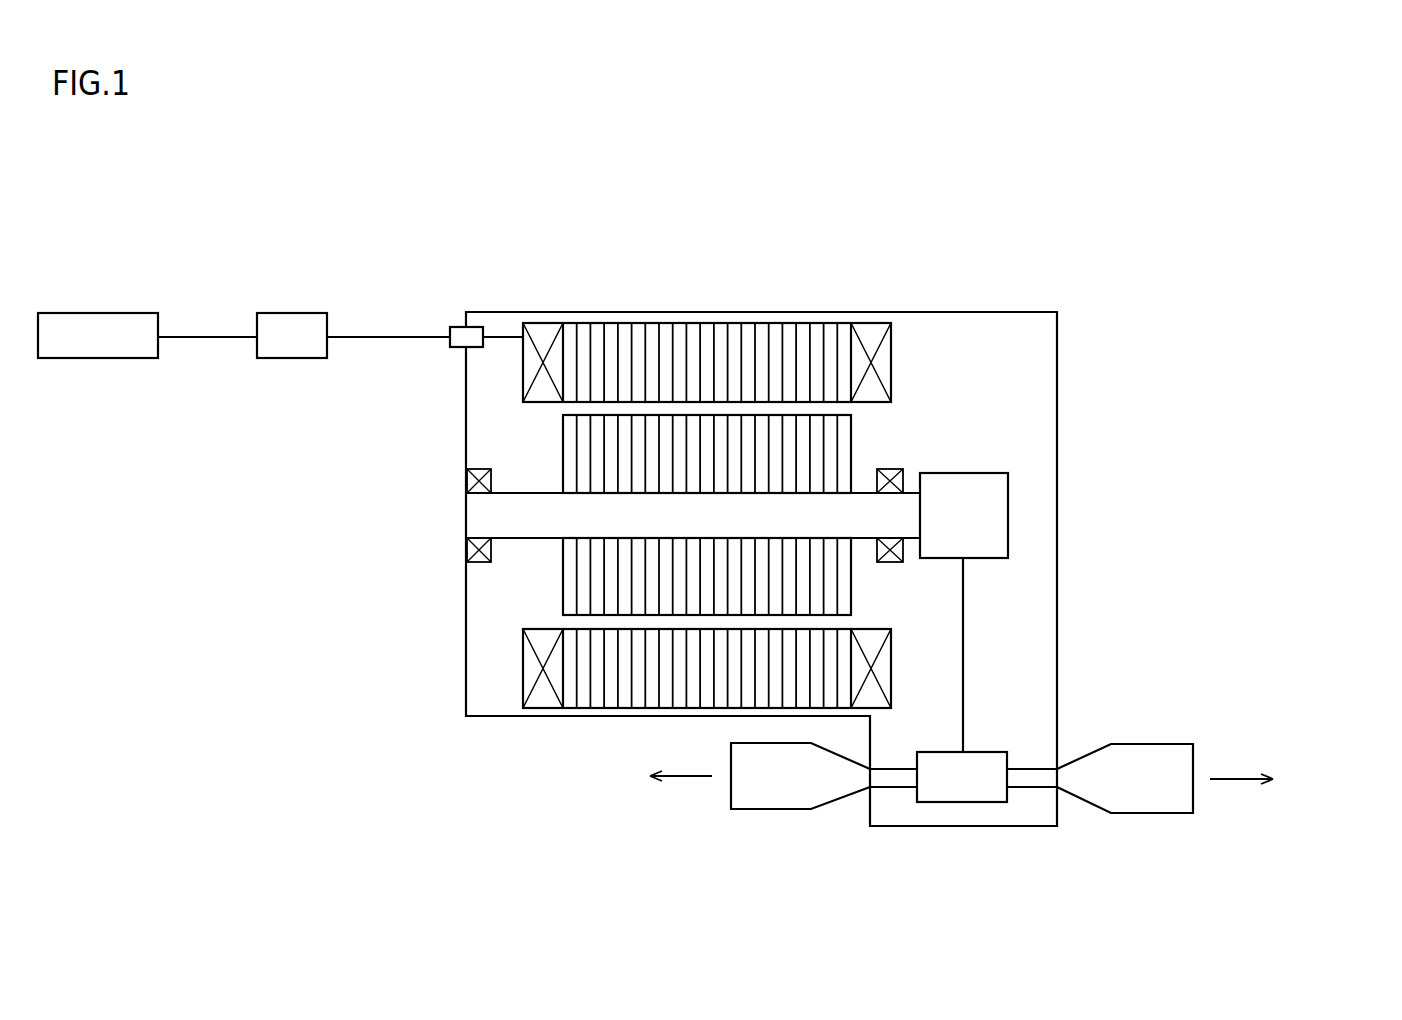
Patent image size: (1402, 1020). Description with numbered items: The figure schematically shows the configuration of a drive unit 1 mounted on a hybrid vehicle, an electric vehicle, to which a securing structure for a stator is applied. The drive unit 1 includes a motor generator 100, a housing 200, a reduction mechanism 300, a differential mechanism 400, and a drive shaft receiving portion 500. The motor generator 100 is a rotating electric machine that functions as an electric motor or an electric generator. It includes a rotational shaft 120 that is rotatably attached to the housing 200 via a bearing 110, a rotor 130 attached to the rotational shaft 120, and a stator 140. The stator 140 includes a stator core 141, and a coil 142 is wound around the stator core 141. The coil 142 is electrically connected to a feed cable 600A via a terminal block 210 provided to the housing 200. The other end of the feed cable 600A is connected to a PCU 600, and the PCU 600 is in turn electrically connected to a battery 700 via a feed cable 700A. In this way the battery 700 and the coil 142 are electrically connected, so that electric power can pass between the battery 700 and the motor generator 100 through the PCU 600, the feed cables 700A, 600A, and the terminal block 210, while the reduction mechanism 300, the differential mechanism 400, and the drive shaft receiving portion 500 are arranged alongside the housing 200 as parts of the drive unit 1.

The drive unit 1 is at (320, 238).
The motor generator 100 is at (872, 213).
The bearing 110 is at (478, 468).
The rotational shaft 120 is at (625, 517).
The rotor 130 is at (707, 442).
The stator 140 is at (902, 257).
The stator core 141 is at (803, 333).
The coil 142 is at (875, 333).
The housing 200 is at (1058, 360).
The terminal block 210 is at (462, 335).
The reduction mechanism 300 is at (988, 515).
The differential mechanism 400 is at (962, 788).
The drive shaft receiving portion 500 is at (783, 787).
The PCU 600 is at (291, 313).
The feed cable 600A is at (367, 337).
The battery 700 is at (95, 313).
The feed cable 700A is at (212, 337).